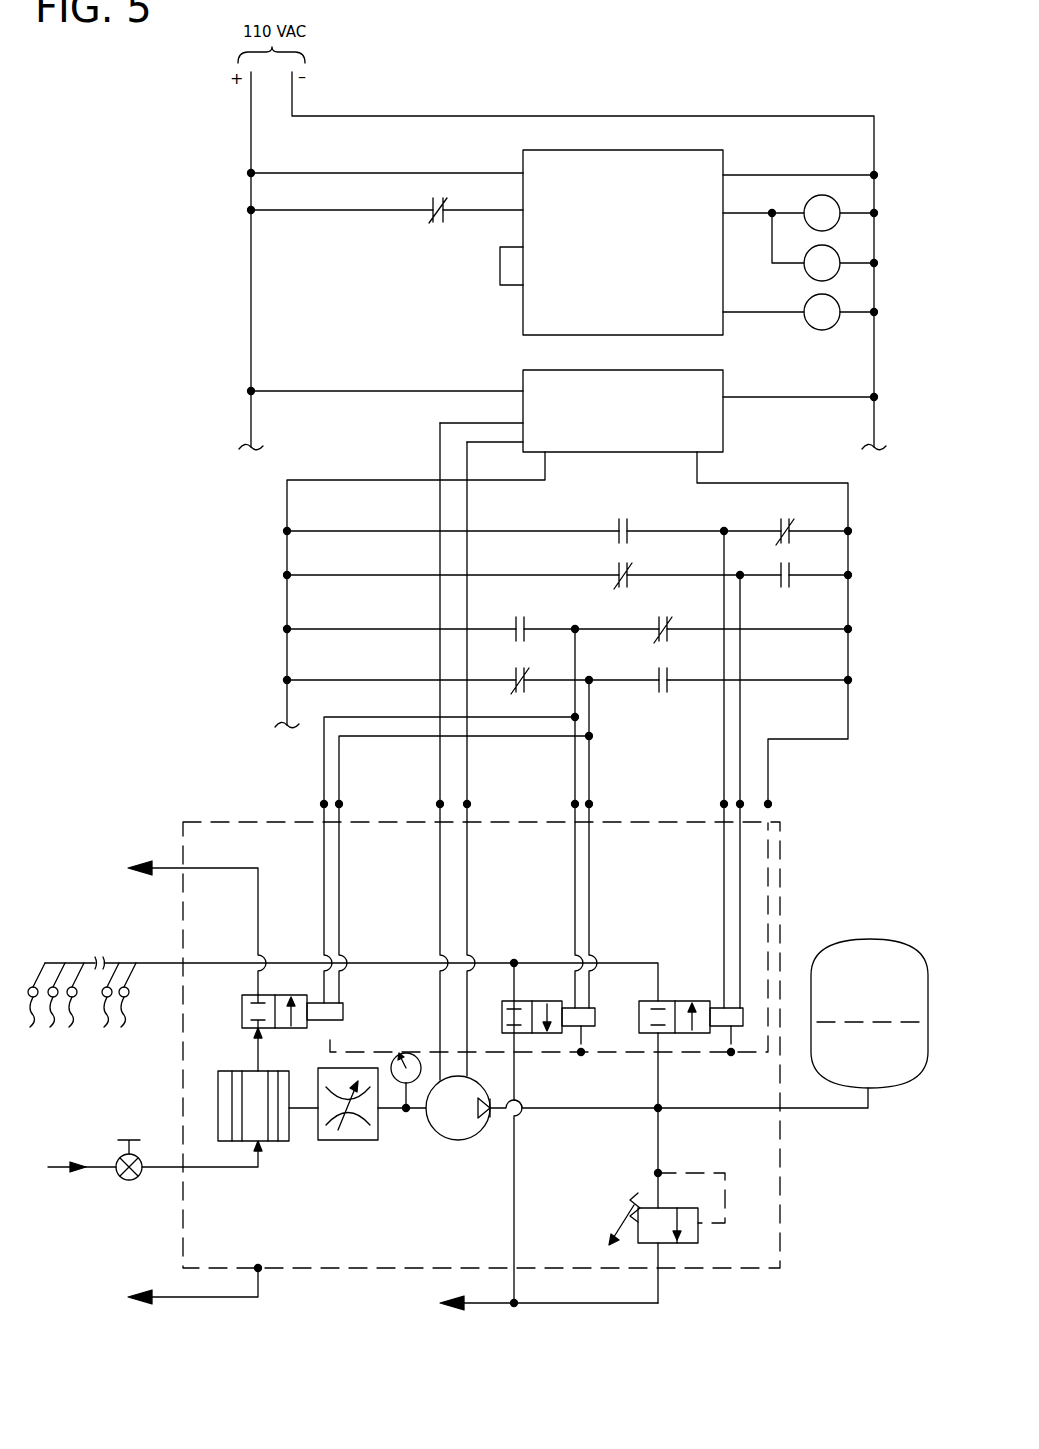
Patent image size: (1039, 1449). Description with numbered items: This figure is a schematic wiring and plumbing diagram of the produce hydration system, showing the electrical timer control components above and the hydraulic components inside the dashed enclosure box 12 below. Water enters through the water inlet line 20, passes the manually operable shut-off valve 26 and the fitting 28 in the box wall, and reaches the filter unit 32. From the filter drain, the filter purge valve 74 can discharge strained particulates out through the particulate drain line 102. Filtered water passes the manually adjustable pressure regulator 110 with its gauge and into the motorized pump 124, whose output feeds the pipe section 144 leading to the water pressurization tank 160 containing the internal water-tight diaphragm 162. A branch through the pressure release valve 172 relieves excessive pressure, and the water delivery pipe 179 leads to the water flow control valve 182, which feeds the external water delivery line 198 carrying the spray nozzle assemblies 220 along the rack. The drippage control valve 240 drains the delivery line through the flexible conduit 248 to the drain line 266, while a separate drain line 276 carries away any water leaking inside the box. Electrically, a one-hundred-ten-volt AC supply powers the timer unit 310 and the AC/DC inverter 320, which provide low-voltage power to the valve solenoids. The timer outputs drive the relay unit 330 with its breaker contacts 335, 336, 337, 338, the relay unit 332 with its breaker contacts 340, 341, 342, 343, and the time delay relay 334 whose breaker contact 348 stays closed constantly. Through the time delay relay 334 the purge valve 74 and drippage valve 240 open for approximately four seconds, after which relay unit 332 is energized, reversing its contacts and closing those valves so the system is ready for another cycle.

The enclosure box 12 is at (185, 821).
The water inlet line 20 is at (60, 1170).
The manually operable shut-off valve 26 is at (129, 1181).
The fitting 28 is at (165, 1170).
The filter unit 32 is at (275, 1141).
The filter purge valve 74 is at (246, 1030).
The particulate drain line 102 is at (170, 866).
The manually adjustable pressure regulator 110 is at (345, 1140).
The motorized pump 124 is at (462, 1141).
The PVC plastic pipe section 144 is at (830, 1112).
The water pressurization tank 160 is at (866, 939).
The internal water-tight diaphragm 162 is at (865, 1021).
The pressure release valve 172 is at (689, 1243).
The water delivery pipe 179 is at (657, 1082).
The water flow control valve 182 is at (689, 1036).
The external water delivery line 198 is at (163, 961).
The spray nozzle assembly 220 is at (82, 1009).
The drippage control valve 240 is at (549, 1035).
The flexible conduit 248 is at (513, 1222).
The drain line 266 is at (490, 1306).
The drain line 276 is at (183, 1300).
The timer unit 310 is at (637, 256).
The AC/DC inverter 320 is at (638, 425).
The relay unit 330 is at (835, 300).
The relay unit 332 is at (835, 201).
The time delay relay 334 is at (835, 251).
The breaker contact 335 is at (628, 519).
The breaker contact 336 is at (779, 523).
The breaker contact 337 is at (628, 566).
The breaker contact 338 is at (789, 585).
The breaker contact 340 is at (511, 622).
The breaker contact 341 is at (657, 622).
The breaker contact 342 is at (511, 674).
The breaker contact 343 is at (656, 670).
The breaker contact 348 is at (437, 223).